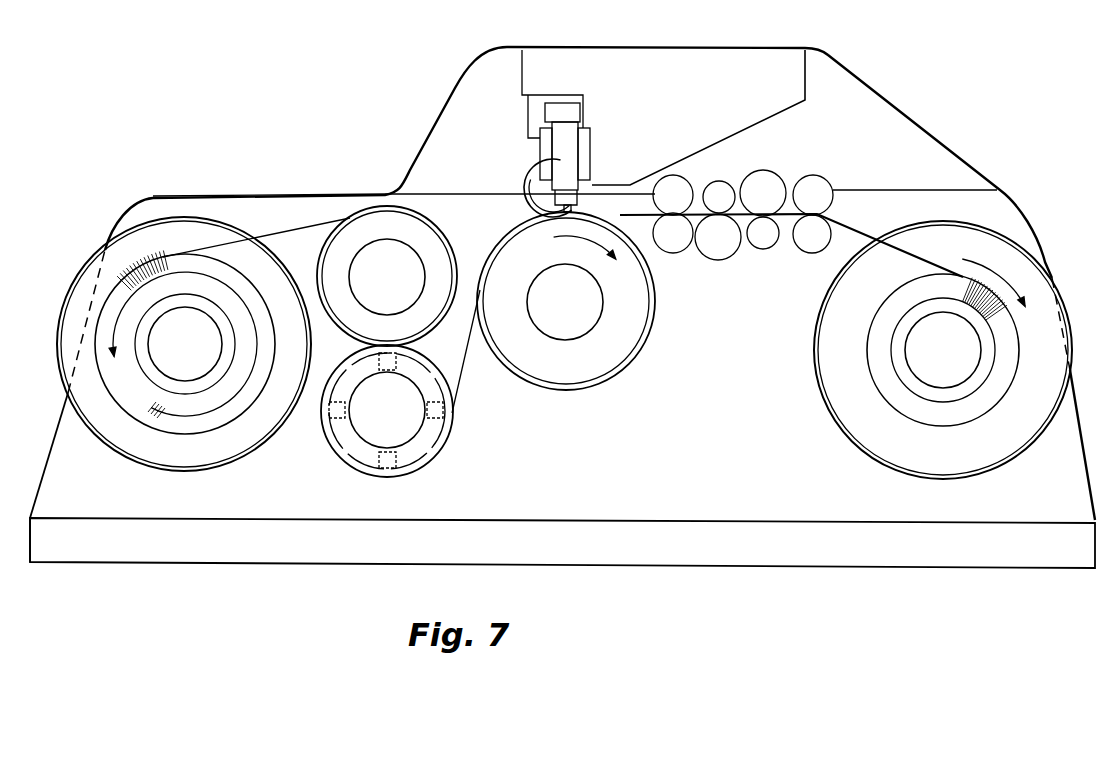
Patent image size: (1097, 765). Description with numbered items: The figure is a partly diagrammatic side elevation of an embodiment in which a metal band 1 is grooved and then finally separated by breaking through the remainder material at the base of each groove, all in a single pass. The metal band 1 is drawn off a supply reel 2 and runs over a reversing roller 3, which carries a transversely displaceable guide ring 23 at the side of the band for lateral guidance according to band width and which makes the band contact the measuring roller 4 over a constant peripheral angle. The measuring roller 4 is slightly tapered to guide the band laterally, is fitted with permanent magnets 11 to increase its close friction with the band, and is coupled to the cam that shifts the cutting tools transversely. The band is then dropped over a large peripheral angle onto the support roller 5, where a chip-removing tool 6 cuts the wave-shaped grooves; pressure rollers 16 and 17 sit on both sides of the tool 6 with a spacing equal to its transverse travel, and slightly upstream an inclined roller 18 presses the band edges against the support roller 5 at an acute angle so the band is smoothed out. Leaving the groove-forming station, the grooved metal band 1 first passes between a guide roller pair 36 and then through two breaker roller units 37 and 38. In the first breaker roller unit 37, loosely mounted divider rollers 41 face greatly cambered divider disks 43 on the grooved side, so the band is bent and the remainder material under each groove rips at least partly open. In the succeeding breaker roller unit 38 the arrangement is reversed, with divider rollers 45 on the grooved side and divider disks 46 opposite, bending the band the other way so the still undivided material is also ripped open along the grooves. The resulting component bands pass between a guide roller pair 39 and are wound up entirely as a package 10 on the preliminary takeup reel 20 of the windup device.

The metal band 1 is at (215, 247).
The supply reel 2 is at (149, 221).
The reversing roller 3 is at (378, 249).
The guide ring 23 is at (373, 210).
The measuring roller 4 is at (405, 418).
The permanent magnets 11 is at (395, 462).
The support roller 5 is at (542, 357).
The chip-removing tool 6 is at (545, 207).
The pressure roller 16 is at (543, 200).
The pressure roller 17 is at (548, 195).
The inclined roller 18 is at (536, 172).
The guide roller pair 36 is at (682, 242).
The divider roller 41 is at (718, 248).
The breaker roller unit 37 is at (737, 253).
The divider disks 46 is at (768, 238).
The breaker roller unit 38 is at (783, 180).
The divider disks 43 is at (717, 190).
The divider rollers 45 is at (770, 185).
The guide roller pair 39 is at (827, 180).
The package 10 is at (957, 283).
The preliminary takeup reel 20 is at (868, 445).